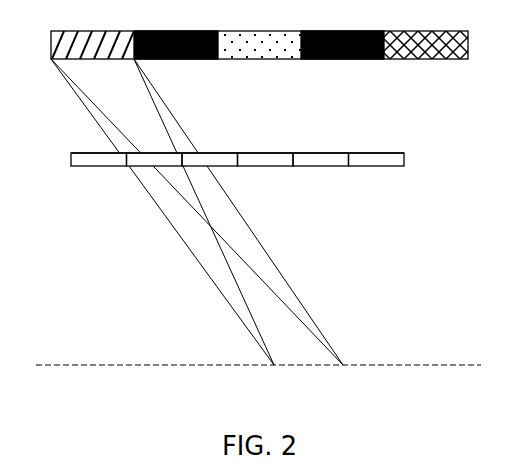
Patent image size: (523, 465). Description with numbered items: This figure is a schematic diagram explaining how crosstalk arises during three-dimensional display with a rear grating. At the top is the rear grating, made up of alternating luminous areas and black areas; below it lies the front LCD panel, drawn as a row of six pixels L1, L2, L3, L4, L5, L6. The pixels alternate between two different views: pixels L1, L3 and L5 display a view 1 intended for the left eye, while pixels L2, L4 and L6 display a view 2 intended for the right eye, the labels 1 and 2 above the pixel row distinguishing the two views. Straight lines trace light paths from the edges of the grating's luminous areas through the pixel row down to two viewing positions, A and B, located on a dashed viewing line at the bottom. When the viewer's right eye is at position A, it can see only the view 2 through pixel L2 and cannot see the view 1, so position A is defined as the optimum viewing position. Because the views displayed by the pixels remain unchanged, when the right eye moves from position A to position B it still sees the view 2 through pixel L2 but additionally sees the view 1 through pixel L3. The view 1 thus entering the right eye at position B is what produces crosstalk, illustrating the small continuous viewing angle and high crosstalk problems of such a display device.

The pixel L1 is at (99, 160).
The pixel L2 is at (155, 160).
The pixel L3 is at (210, 160).
The pixel L4 is at (266, 160).
The pixel L5 is at (321, 160).
The pixel L6 is at (377, 160).
The view 1 is at (210, 144).
The view 2 is at (266, 144).
The position A is at (169, 229).
The position B is at (202, 229).